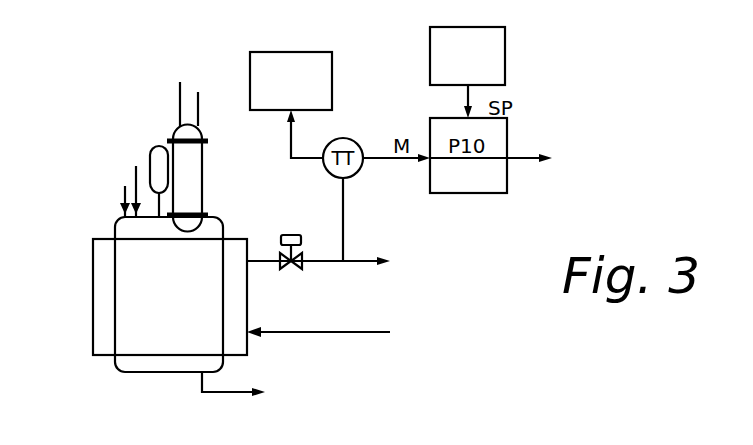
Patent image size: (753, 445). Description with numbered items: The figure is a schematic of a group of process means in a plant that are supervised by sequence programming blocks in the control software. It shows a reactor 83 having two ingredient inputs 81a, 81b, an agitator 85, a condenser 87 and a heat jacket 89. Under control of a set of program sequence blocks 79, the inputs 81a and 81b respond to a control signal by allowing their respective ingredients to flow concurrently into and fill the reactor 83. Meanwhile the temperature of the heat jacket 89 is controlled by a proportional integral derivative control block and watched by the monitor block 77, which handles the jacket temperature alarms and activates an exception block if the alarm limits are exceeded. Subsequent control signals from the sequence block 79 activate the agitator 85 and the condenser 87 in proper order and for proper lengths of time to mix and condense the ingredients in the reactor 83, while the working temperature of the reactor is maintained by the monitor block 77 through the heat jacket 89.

The monitor block 77 is at (274, 95).
The sequence block 79 is at (452, 70).
The ingredient input 81a is at (136, 166).
The ingredient input 81b is at (125, 186).
The reactor 83 is at (118, 373).
The agitator 85 is at (140, 148).
The condenser 87 is at (213, 193).
The heat jacket 89 is at (93, 288).